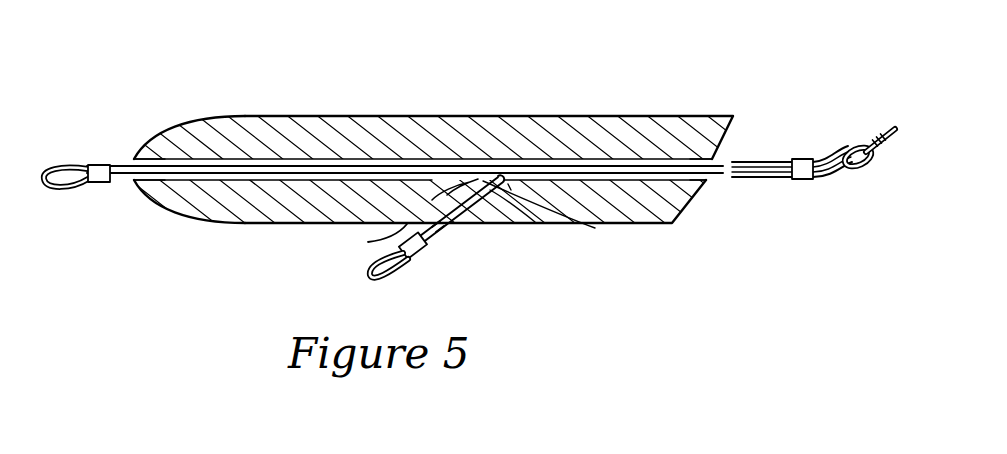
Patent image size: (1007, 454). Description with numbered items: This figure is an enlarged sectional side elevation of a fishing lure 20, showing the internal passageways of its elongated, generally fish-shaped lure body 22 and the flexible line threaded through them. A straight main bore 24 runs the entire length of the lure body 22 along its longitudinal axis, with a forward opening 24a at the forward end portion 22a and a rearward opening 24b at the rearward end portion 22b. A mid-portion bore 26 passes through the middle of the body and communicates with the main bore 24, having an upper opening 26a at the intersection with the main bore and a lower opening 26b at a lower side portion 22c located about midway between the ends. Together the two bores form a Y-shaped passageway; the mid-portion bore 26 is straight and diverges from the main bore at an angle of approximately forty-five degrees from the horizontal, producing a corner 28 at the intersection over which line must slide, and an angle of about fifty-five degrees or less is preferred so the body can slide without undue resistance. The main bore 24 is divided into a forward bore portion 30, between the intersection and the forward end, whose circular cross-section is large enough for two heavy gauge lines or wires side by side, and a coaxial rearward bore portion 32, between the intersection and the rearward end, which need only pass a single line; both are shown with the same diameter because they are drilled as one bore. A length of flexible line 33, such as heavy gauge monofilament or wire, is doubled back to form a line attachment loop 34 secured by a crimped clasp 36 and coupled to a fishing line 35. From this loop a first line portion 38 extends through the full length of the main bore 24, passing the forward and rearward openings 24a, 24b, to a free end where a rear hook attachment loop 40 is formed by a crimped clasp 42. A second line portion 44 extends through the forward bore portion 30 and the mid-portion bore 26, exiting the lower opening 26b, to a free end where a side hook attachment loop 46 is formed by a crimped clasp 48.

The fishing lure 20 is at (593, 88).
The lure body 22 is at (462, 117).
The forward end portion 22a is at (738, 120).
The rearward end portion 22b is at (163, 128).
The lower side portion 22c is at (480, 225).
The main bore 24 is at (140, 153).
The forward opening 24a is at (720, 158).
The rearward opening 24b is at (133, 182).
The mid-portion bore 26 is at (478, 183).
The upper opening 26a is at (482, 180).
The lower opening 26b is at (455, 225).
The corner 28 is at (595, 228).
The forward bore portion 30 is at (653, 160).
The rearward bore portion 32 is at (307, 160).
The flexible line 33 is at (837, 146).
The line attachment loop 34 is at (838, 178).
The fishing line 35 is at (858, 158).
The crimped clasp 36 is at (808, 157).
The first line portion 38 is at (768, 162).
The rear hook attachment loop 40 is at (55, 166).
The crimped clasp 42 is at (104, 165).
The second line portion 44 is at (770, 178).
The side hook attachment loop 46 is at (378, 275).
The crimped clasp 48 is at (423, 253).